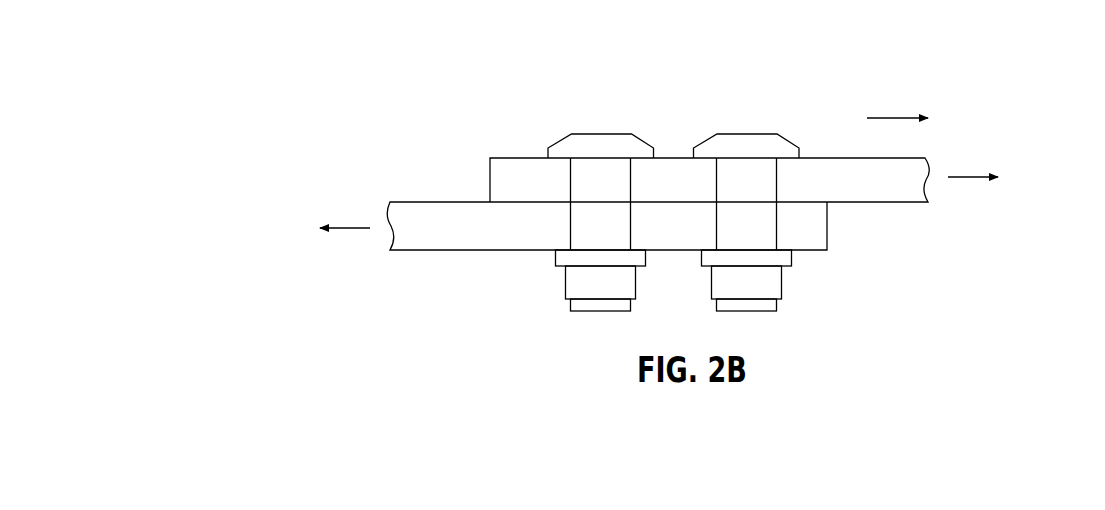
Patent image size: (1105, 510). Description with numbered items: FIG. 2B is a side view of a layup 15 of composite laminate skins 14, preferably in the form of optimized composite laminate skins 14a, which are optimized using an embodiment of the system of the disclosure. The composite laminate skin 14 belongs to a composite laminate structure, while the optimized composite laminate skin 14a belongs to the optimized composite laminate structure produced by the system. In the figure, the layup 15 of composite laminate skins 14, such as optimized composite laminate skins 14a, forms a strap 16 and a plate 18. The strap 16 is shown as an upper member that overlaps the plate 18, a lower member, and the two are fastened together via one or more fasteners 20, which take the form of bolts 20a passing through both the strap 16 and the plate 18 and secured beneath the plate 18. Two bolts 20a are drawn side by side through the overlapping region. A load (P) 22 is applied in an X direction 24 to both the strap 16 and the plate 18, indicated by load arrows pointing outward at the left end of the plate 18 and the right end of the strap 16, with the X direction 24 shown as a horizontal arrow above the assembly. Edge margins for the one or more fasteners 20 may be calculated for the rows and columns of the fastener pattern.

The composite laminate skin 14 is at (390, 125).
The optimized composite laminate skin 14a is at (447, 160).
The layup 15 is at (677, 253).
The strap 16 is at (885, 197).
The plate 18 is at (512, 252).
The fasteners 20 is at (700, 135).
The bolts 20a is at (603, 134).
The load (P) 22 is at (347, 227).
The X direction 24 is at (883, 117).